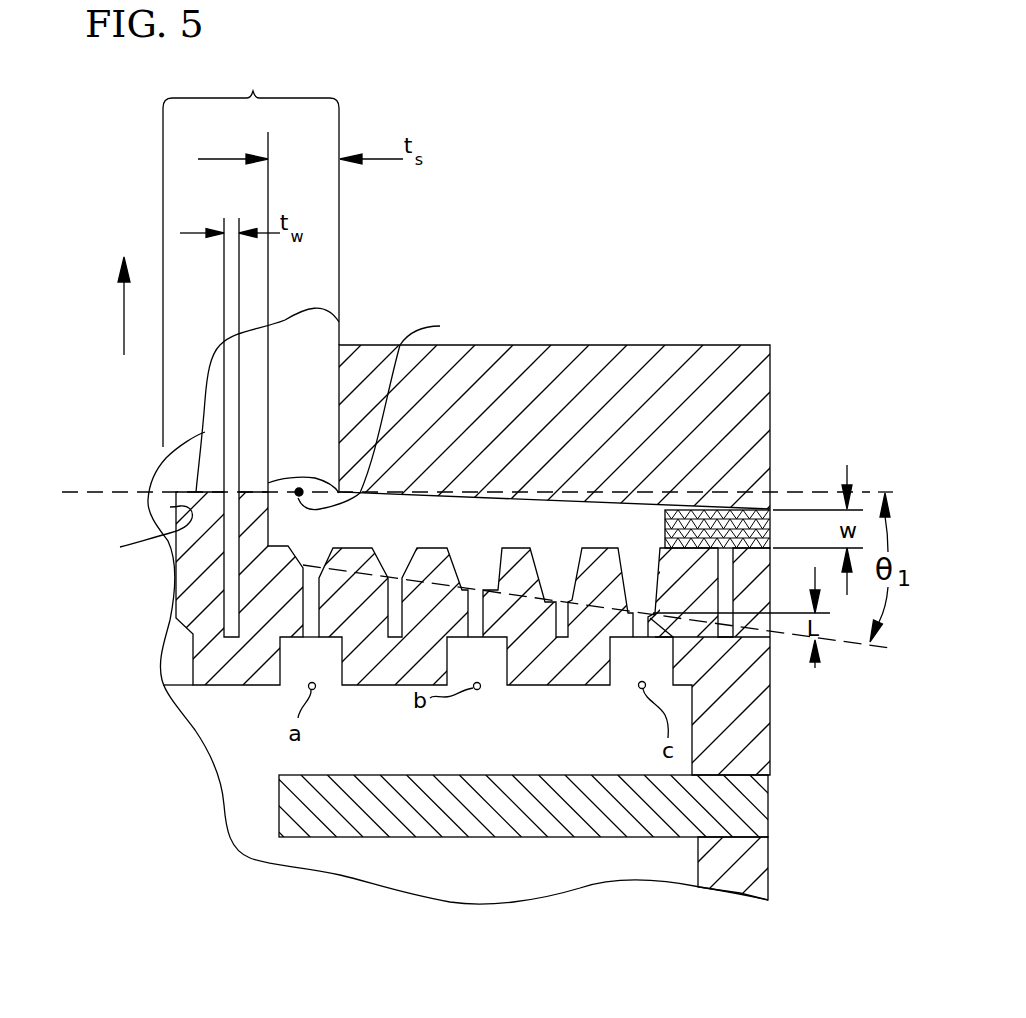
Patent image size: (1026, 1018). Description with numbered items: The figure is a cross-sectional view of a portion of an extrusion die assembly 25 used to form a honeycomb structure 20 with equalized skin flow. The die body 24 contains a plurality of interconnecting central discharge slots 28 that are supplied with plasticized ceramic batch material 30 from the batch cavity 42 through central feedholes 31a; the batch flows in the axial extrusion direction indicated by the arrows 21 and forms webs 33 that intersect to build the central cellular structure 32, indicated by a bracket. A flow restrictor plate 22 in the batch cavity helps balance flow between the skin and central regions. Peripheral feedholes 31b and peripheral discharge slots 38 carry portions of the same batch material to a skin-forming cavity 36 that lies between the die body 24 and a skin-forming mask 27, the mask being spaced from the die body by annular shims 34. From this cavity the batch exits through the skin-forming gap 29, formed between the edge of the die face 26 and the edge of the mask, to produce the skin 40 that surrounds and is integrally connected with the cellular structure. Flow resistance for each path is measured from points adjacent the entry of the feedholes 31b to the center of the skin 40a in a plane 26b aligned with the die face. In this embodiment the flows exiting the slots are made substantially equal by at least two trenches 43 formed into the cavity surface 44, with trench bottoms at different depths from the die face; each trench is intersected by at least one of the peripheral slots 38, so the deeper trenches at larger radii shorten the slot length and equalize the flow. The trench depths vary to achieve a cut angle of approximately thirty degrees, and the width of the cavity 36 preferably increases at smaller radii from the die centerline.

The honeycomb structure 20 is at (448, 208).
The arrows 21 is at (124, 316).
The flow restrictor plate 22 is at (750, 824).
The die body 24 is at (190, 575).
The die assembly 25 is at (147, 628).
The die face 26 is at (193, 492).
The plane aligned with the die face 26b is at (88, 492).
The skin-forming mask 27 is at (563, 360).
The central discharge slots 28 is at (231, 552).
The skin-forming gap 29 is at (299, 492).
The batch material 30 is at (250, 737).
The central feedholes 31a is at (182, 672).
The peripheral feedholes 31b is at (330, 677).
The central cellular structure 32 is at (251, 257).
The webs 33 is at (233, 368).
The annular shims 34 is at (773, 510).
The skin-forming cavity 36 is at (612, 515).
The peripheral discharge slots 38 is at (320, 588).
The skin 40 is at (311, 348).
The center of the skin 40a is at (390, 410).
The batch cavity 42 is at (422, 748).
The trenches 43 is at (480, 560).
The cavity surface 44 is at (428, 548).